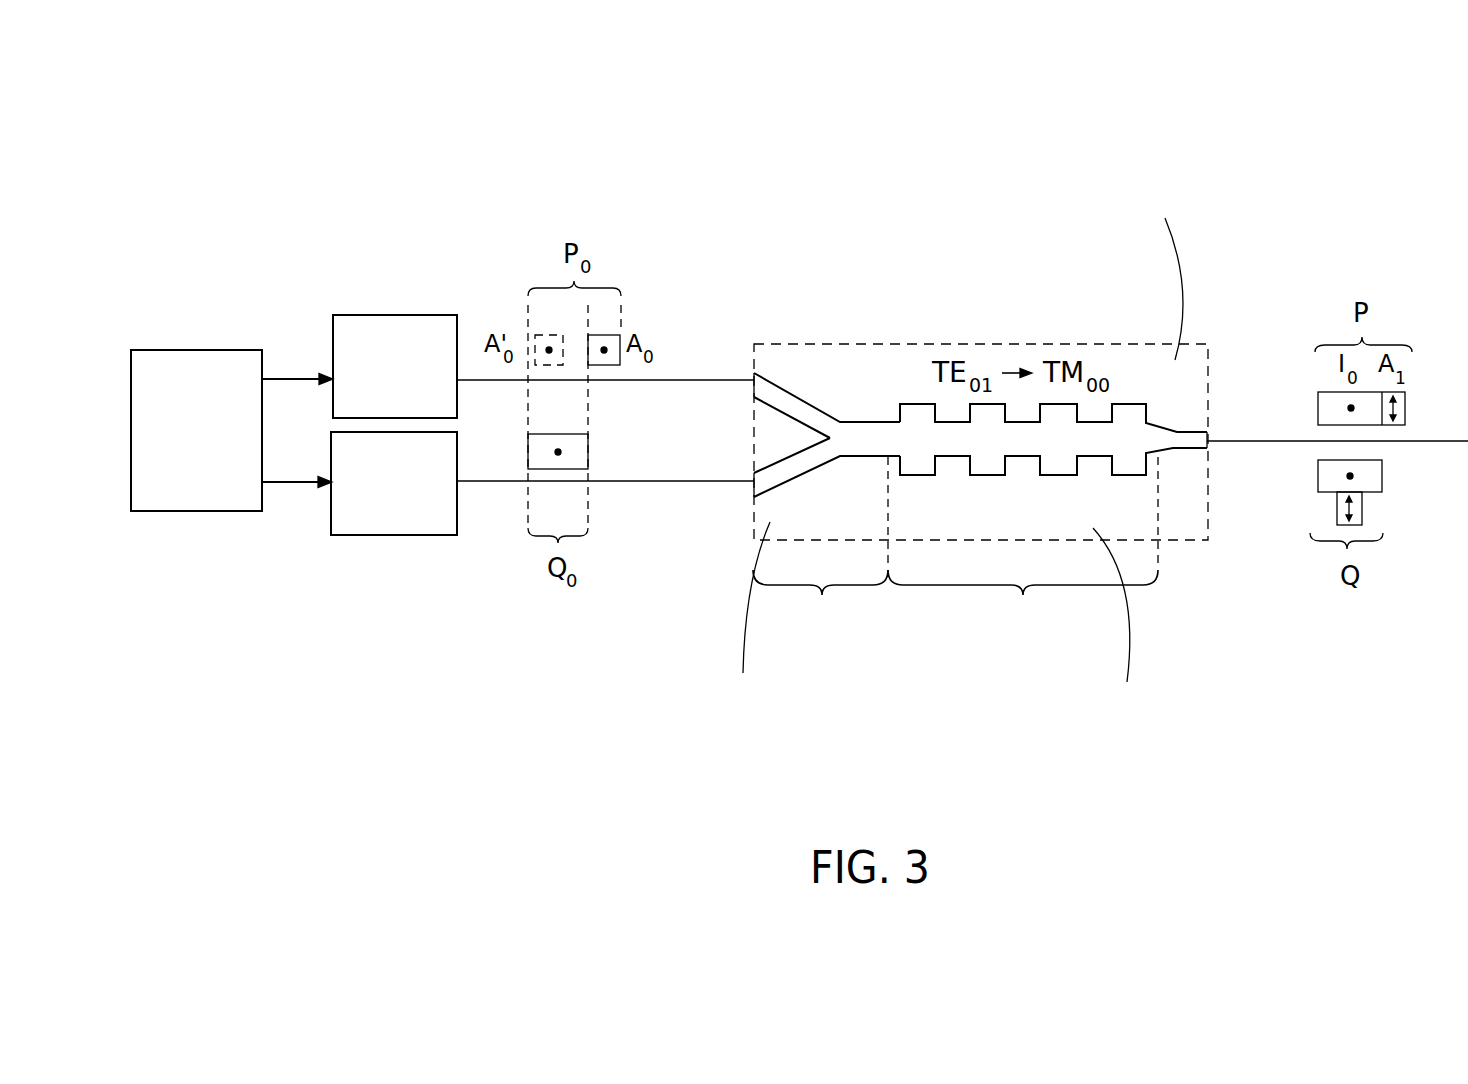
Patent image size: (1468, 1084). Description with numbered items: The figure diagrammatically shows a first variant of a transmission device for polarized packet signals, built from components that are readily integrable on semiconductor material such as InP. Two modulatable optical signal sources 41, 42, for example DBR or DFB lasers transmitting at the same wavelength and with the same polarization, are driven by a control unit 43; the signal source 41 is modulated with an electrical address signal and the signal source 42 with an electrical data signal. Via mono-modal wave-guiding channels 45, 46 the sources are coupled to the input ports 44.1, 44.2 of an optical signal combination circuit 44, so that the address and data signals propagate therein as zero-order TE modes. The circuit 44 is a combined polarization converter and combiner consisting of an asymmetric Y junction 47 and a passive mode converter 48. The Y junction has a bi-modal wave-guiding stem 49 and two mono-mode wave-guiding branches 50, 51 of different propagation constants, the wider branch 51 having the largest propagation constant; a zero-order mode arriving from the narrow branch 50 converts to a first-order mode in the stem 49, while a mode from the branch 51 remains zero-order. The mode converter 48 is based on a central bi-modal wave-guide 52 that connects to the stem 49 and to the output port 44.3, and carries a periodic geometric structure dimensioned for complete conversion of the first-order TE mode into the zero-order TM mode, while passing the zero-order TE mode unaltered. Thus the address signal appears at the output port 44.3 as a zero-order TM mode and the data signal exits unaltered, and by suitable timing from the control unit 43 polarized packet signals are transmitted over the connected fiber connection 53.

The optical signal source 41 is at (387, 315).
The optical signal source 42 is at (368, 535).
The control unit 43 is at (210, 511).
The optical signal combination circuit 44 is at (933, 343).
The input port 44.1 is at (753, 380).
The input port 44.2 is at (753, 481).
The output port 44.3 is at (1214, 441).
The mono-modal wave-guiding channel 45 is at (650, 380).
The mono-modal wave-guiding channel 46 is at (662, 481).
The asymmetric Y junction 47 is at (778, 609).
The passive mode converter 48 is at (1056, 600).
The bi-modal wave-guiding stem 49 is at (852, 425).
The mono-mode wave-guiding branch 50 is at (788, 400).
The mono-mode wave-guiding branch 51 is at (800, 467).
The central bi-modal channel-shaped wave-guide 52 is at (952, 447).
The fiber connection 53 is at (1407, 441).